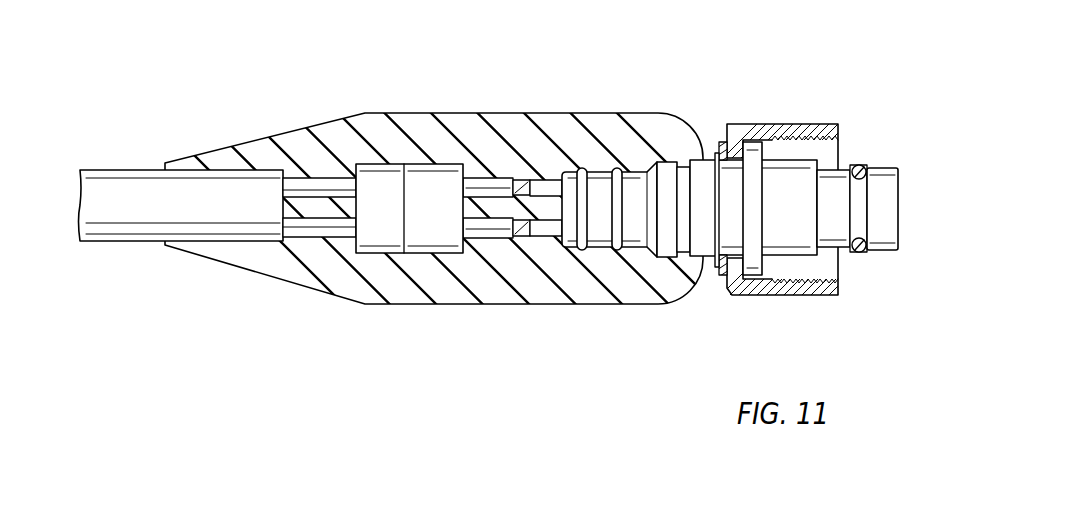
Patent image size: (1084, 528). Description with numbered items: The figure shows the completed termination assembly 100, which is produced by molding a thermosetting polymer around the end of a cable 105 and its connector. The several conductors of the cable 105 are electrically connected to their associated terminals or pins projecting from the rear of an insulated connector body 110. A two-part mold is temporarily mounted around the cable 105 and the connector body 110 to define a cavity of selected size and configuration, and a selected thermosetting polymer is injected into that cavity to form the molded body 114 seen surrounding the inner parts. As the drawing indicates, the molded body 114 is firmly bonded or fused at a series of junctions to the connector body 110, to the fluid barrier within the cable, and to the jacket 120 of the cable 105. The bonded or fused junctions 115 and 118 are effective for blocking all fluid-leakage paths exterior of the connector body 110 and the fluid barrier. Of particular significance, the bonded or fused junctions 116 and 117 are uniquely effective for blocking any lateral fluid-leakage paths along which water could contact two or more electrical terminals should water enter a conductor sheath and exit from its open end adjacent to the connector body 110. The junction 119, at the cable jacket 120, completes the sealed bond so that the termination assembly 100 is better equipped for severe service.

The termination assembly 100 is at (454, 113).
The cable 105 is at (133, 245).
The connector body 110 is at (662, 250).
The molded body 114 is at (535, 292).
The bonded or fused junction 115 is at (600, 172).
The bonded or fused junction 116 is at (556, 200).
The bonded or fused junction 117 is at (464, 246).
The bonded or fused junction 118 is at (424, 245).
The bonded or fused junction 119 is at (240, 245).
The jacket 120 is at (245, 214).